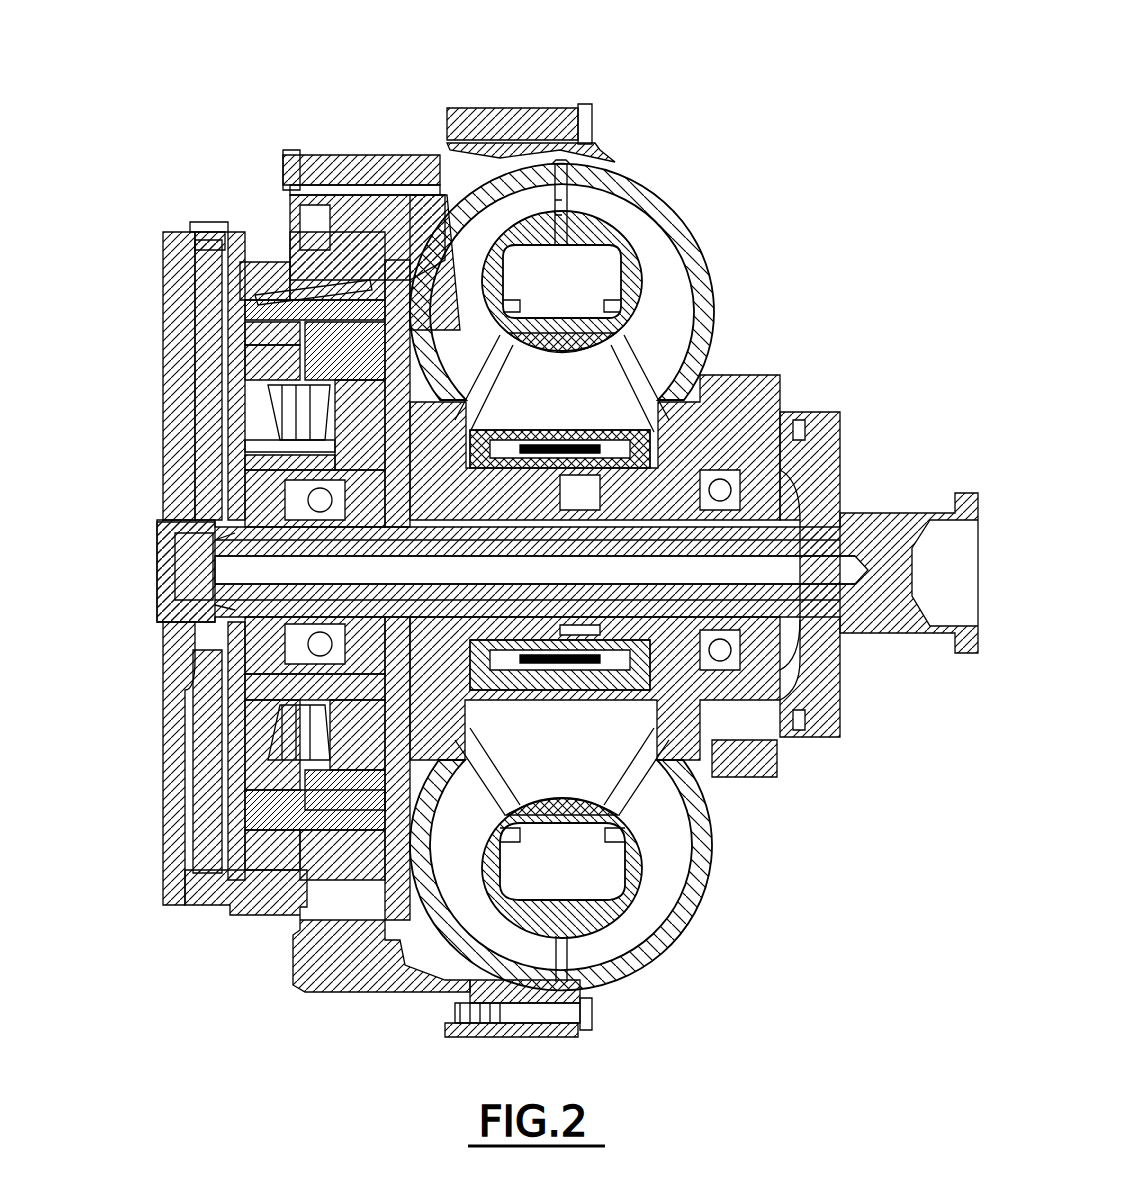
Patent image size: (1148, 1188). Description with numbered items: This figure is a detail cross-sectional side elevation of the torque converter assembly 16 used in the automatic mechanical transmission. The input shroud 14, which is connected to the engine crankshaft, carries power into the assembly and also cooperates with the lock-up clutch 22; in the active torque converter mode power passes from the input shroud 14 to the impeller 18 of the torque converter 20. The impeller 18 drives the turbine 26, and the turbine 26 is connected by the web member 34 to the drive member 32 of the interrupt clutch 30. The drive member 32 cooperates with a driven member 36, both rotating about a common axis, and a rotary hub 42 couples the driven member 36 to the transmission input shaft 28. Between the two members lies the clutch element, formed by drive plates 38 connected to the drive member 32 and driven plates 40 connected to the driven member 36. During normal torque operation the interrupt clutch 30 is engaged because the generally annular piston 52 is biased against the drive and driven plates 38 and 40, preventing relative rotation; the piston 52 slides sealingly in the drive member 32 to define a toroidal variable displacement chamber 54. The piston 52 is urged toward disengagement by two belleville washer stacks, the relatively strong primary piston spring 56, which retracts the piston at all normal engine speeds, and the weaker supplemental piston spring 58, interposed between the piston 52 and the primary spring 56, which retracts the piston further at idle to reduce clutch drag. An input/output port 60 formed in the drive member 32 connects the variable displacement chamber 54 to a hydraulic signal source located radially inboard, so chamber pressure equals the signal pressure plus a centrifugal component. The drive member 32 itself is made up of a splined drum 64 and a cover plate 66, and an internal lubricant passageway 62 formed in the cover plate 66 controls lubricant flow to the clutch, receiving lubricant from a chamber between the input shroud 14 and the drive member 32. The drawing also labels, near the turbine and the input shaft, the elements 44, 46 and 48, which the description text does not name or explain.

The input shroud 14 is at (200, 402).
The torque converter assembly 16 is at (748, 134).
The impeller 18 is at (678, 286).
The torque converter 20 is at (606, 192).
The lock-up clutch 22 is at (373, 205).
The turbine 26 is at (468, 303).
The transmission input shaft 28 is at (907, 508).
The interrupt clutch 30 is at (305, 290).
The drive member 32 is at (200, 232).
The web member 34 is at (462, 382).
The driven member 36 is at (305, 350).
The drive plates 38 is at (235, 310).
The driven plates 40 is at (255, 330).
The rotary hub 42 is at (330, 545).
The bearing 44 is at (570, 392).
The bearing race 46 is at (560, 440).
The coupling 48 is at (812, 412).
The piston 52 is at (265, 385).
The variable displacement chamber 54 is at (230, 802).
The primary piston spring 56 is at (270, 445).
The supplemental piston spring 58 is at (268, 418).
The input/output port 60 is at (230, 690).
The internal lubricant passageway 62 is at (285, 460).
The splined drum 64 is at (345, 215).
The cover plate 66 is at (250, 265).